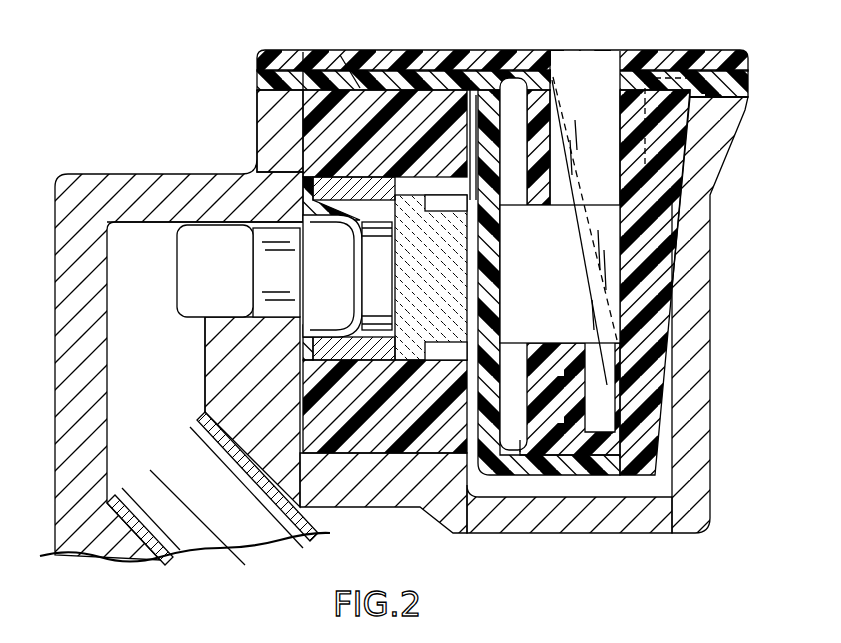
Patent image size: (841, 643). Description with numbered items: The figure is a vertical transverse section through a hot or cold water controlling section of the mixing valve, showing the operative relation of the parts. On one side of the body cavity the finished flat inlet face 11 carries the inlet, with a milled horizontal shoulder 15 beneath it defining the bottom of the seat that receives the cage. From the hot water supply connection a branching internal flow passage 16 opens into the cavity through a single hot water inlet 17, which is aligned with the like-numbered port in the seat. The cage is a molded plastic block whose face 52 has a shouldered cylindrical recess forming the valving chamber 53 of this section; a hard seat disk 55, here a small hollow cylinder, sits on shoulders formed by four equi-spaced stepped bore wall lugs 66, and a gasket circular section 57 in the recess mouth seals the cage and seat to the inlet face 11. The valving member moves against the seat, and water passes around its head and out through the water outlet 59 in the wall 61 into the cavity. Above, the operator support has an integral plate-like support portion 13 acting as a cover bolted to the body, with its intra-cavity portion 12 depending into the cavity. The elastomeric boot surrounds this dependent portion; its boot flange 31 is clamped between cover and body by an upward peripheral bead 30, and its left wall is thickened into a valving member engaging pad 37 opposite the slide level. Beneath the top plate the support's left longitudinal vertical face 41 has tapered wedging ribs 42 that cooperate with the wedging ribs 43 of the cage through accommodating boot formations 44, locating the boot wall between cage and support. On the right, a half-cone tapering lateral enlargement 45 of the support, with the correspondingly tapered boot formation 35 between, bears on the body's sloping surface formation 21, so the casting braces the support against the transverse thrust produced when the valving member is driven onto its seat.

The inlet face 11 is at (330, 470).
The intra-cavity portion of support 12 is at (640, 392).
The plate-like support portion 13 is at (262, 72).
The milled horizontal shoulder 15 is at (375, 478).
The internal flow passage 16 is at (165, 280).
The hot water inlet 17 is at (322, 268).
The sloping surface formation 21 is at (700, 172).
The peripheral bead 30 is at (276, 54).
The boot flange 31 is at (355, 70).
The tapering formation of boot 35 is at (672, 235).
The valving member engaging pad 37 is at (505, 262).
The left longitudinal vertical face 41 is at (512, 452).
The wedging rib 42 is at (512, 90).
The wedging rib of cage 43 is at (458, 255).
The boot formation 44 is at (482, 100).
The tapering lateral enlargement 45 is at (690, 145).
The cage face 52 is at (312, 60).
The valving chamber 53 is at (385, 406).
The seat disk 55 is at (366, 180).
The gasket circular section 57 is at (310, 170).
The water outlet 59 is at (505, 340).
The wall 61 is at (472, 165).
The stepped bore wall lug 66 is at (410, 345).